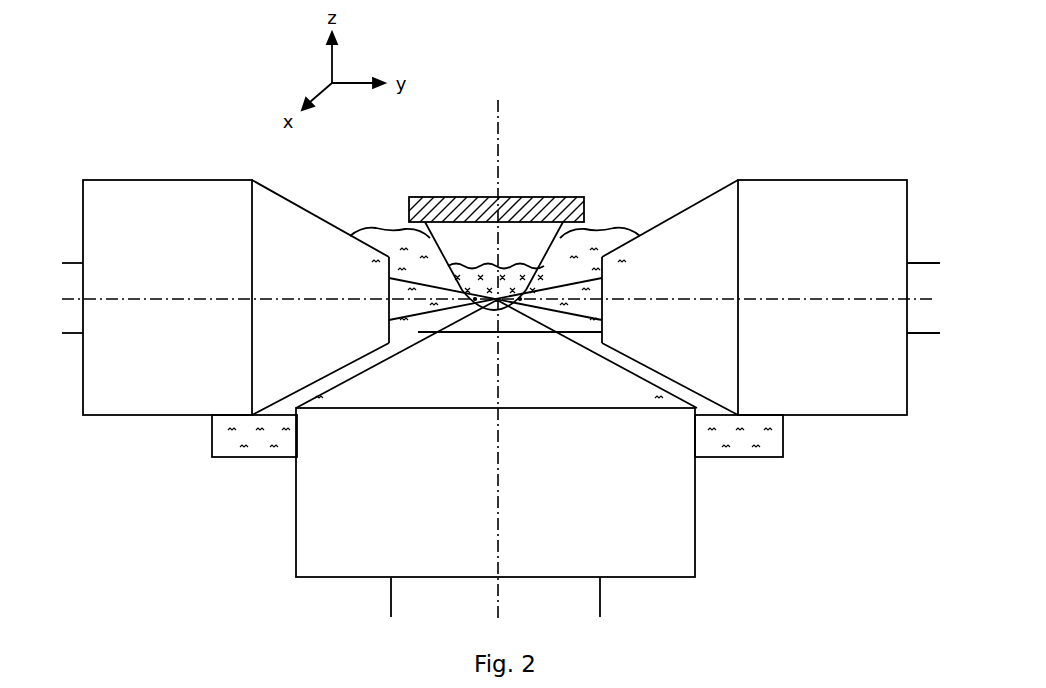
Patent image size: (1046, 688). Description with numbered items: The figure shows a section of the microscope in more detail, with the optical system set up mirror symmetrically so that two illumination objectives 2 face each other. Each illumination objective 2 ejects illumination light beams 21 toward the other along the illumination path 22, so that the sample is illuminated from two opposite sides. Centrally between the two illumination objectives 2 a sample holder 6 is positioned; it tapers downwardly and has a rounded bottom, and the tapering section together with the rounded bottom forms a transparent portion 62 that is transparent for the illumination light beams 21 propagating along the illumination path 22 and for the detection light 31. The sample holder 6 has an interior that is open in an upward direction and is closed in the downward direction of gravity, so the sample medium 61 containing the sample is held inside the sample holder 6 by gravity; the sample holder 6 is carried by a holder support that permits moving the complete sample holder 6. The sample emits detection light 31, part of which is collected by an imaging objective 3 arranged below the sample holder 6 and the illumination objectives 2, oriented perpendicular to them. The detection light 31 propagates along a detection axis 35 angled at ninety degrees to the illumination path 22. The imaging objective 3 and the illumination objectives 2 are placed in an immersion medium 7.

The illumination objective 2 is at (180, 187).
The illumination light beam 21 is at (403, 287).
The illumination path 22 is at (847, 299).
The imaging objective 3 is at (695, 508).
The detection light 31 is at (520, 322).
The detection axis 35 is at (498, 518).
The sample holder 6 is at (428, 197).
The sample medium 61 is at (468, 268).
The transparent portion 62 is at (557, 256).
The immersion medium 7 is at (218, 440).